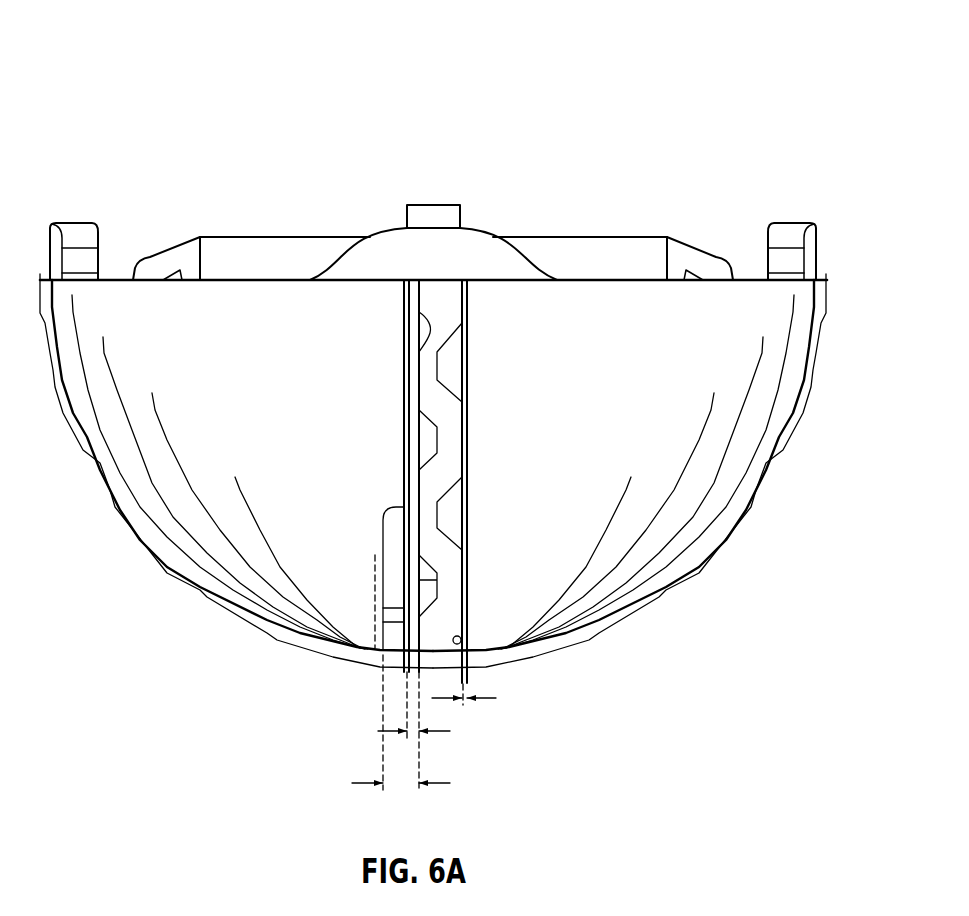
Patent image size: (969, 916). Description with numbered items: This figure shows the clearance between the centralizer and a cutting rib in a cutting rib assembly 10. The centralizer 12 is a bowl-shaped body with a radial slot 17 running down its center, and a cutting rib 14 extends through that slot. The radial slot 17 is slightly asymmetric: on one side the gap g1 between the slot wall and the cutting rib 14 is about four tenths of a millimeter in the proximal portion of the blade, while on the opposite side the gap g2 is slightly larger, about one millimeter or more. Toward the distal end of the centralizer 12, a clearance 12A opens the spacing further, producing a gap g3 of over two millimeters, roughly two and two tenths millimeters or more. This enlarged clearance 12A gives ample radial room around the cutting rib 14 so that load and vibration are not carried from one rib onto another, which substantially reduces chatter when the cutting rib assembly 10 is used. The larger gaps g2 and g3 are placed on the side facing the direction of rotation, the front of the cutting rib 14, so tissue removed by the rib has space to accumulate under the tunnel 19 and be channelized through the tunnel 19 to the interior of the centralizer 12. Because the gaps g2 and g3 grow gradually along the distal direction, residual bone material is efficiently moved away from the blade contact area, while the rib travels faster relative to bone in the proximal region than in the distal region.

The cutting rib assembly 10 is at (146, 41).
The centralizer 12 is at (758, 403).
The clearance 12A is at (390, 558).
The cutting rib 14 is at (233, 257).
The radial slot 17 is at (430, 389).
The tunnel 19 is at (452, 522).
The gap g1 is at (488, 699).
The gap g2 is at (437, 733).
The gap g3 is at (368, 783).